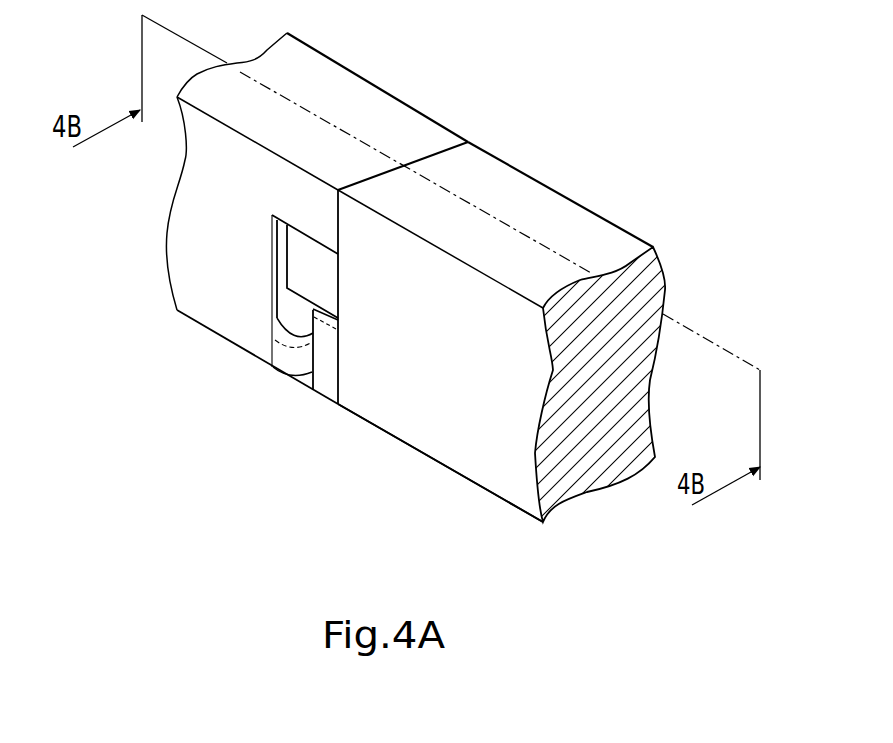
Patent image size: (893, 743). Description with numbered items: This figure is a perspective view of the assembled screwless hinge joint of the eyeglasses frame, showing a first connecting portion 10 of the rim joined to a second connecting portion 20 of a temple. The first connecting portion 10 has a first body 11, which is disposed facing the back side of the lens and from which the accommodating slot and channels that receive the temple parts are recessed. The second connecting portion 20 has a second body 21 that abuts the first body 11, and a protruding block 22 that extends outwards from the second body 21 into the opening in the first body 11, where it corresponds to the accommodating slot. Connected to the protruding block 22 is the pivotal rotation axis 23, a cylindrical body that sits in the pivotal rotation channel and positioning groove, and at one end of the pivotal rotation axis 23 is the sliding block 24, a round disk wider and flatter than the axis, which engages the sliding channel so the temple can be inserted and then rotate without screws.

The first connecting portion 10 is at (377, 82).
The first body 11 is at (198, 210).
The second connecting portion 20 is at (563, 193).
The second body 21 is at (485, 437).
The protruding block 22 is at (318, 283).
The pivotal rotation axis 23 is at (290, 305).
The sliding block 24 is at (295, 357).